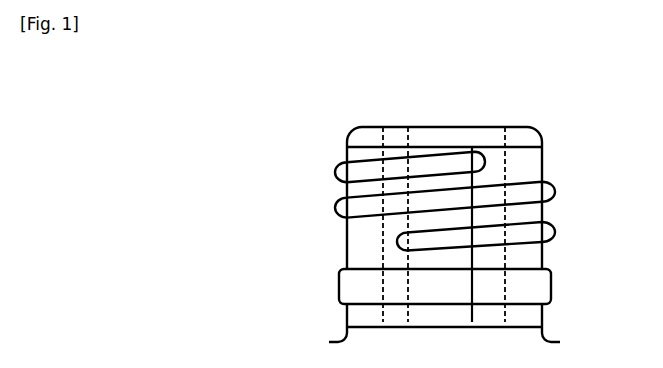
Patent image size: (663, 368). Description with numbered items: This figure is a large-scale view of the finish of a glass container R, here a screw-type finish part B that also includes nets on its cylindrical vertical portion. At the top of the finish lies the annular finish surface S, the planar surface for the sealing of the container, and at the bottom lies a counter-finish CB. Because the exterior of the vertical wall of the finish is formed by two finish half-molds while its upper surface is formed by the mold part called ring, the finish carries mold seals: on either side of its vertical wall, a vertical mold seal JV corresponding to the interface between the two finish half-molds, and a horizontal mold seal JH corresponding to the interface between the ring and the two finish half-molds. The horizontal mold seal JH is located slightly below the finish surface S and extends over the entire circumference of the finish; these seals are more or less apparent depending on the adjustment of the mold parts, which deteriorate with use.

The finish part B is at (333, 141).
The finish surface S is at (467, 127).
The horizontal mold seal JH is at (524, 147).
The vertical mold seal JV is at (396, 254).
The counter-finish CB is at (333, 286).
The container R is at (351, 313).